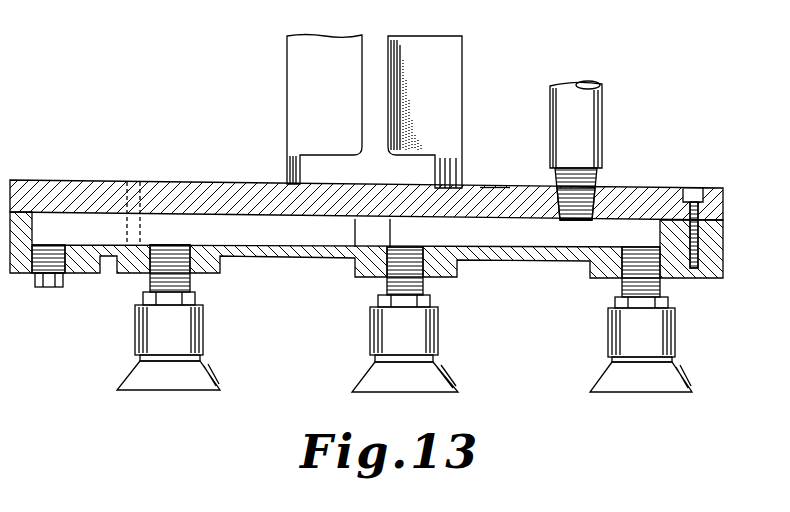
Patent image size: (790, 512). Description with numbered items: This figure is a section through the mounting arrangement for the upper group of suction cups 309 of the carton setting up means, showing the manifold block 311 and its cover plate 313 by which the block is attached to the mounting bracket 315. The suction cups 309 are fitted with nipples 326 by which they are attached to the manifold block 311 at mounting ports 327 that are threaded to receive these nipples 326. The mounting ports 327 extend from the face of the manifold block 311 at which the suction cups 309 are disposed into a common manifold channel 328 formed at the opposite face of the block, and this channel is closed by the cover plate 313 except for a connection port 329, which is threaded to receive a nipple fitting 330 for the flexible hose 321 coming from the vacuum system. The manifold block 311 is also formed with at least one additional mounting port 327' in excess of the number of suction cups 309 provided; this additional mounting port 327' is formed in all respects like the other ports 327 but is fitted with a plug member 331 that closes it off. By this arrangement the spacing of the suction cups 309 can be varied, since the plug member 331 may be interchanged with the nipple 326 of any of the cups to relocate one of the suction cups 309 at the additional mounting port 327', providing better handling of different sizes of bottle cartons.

The suction cups 309 is at (165, 382).
The manifold block 311 is at (267, 260).
The cover plate 313 is at (232, 183).
The mounting bracket 315 is at (297, 62).
The flexible hose 321 is at (592, 147).
The nipples 326 is at (153, 283).
The mounting ports 327 is at (405, 260).
The additional mounting port 327' is at (64, 248).
The manifold channel 328 is at (494, 188).
The connection port 329 is at (575, 222).
The nipple fitting 330 is at (598, 175).
The plug member 331 is at (47, 288).